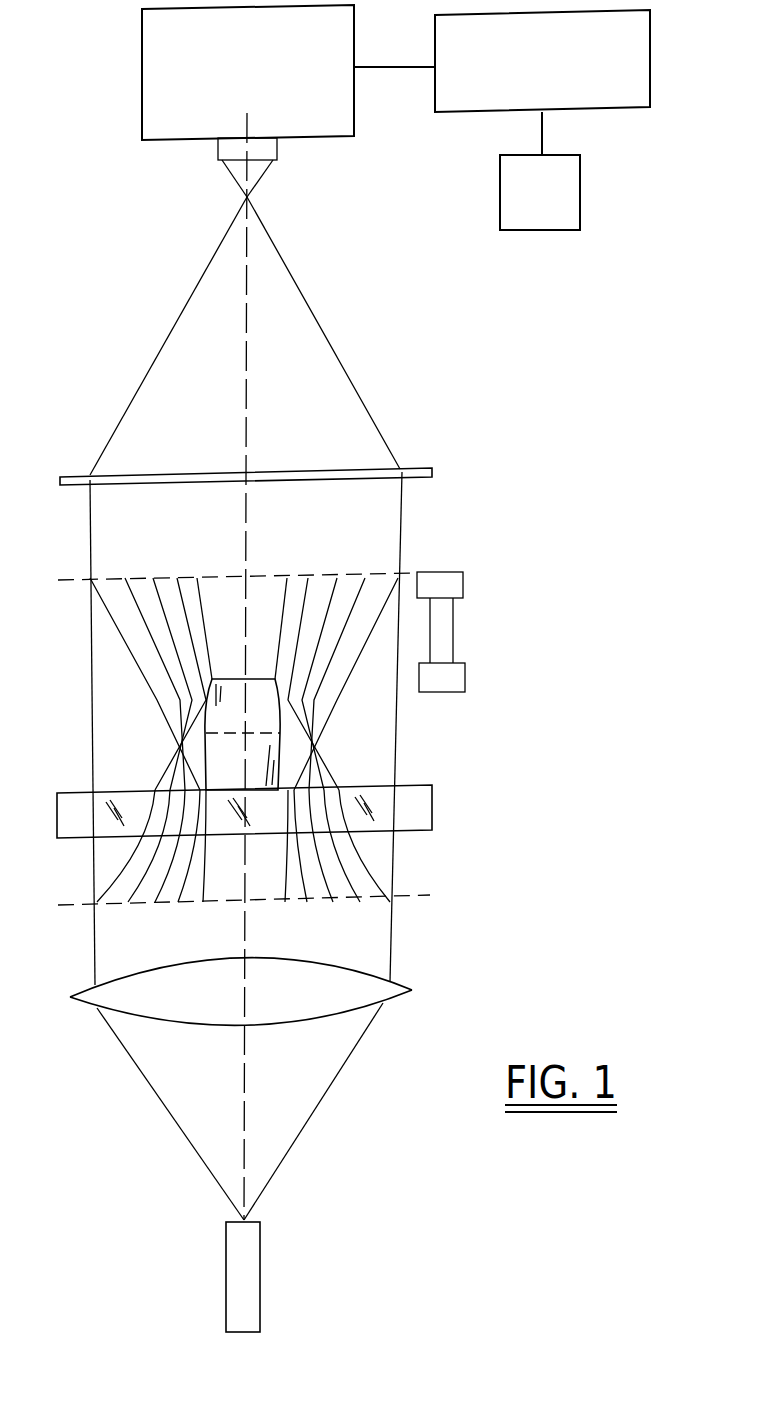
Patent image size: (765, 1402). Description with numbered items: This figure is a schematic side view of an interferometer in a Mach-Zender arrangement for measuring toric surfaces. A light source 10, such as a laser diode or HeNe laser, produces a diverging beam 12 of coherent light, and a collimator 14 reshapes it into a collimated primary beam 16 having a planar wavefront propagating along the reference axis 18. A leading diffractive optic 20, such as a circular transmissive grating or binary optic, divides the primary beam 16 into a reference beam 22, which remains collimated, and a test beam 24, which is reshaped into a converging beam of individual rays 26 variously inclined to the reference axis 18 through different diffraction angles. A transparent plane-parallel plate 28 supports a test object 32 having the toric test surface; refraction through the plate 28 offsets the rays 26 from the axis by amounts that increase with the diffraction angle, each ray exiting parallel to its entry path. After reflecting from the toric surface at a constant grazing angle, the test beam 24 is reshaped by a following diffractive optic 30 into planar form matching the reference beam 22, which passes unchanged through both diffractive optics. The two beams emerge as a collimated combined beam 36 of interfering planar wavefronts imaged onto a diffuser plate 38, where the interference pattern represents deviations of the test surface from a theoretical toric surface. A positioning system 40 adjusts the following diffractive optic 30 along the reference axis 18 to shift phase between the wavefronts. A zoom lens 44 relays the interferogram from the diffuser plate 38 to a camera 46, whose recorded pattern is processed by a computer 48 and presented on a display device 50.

The light source 10 is at (245, 1252).
The diverging beam 12 is at (155, 1093).
The collimator 14 is at (392, 990).
The collimated primary beam 16 is at (93, 945).
The reference axis 18 is at (243, 1043).
The leading diffractive optic 20 is at (433, 895).
The reference beam 22 is at (84, 686).
The test beam 24 is at (341, 690).
The individual rays 26 is at (120, 863).
The transparent plane-parallel plate 28 is at (422, 808).
The following diffractive optic 30 is at (73, 583).
The test object 32 is at (228, 772).
The collimated combined beam 36 is at (90, 552).
The diffuser plate 38 is at (420, 467).
The positioning system 40 is at (453, 677).
The zoom lens 44 is at (280, 146).
The camera 46 is at (258, 83).
The computer 48 is at (463, 112).
The display device 50 is at (523, 205).